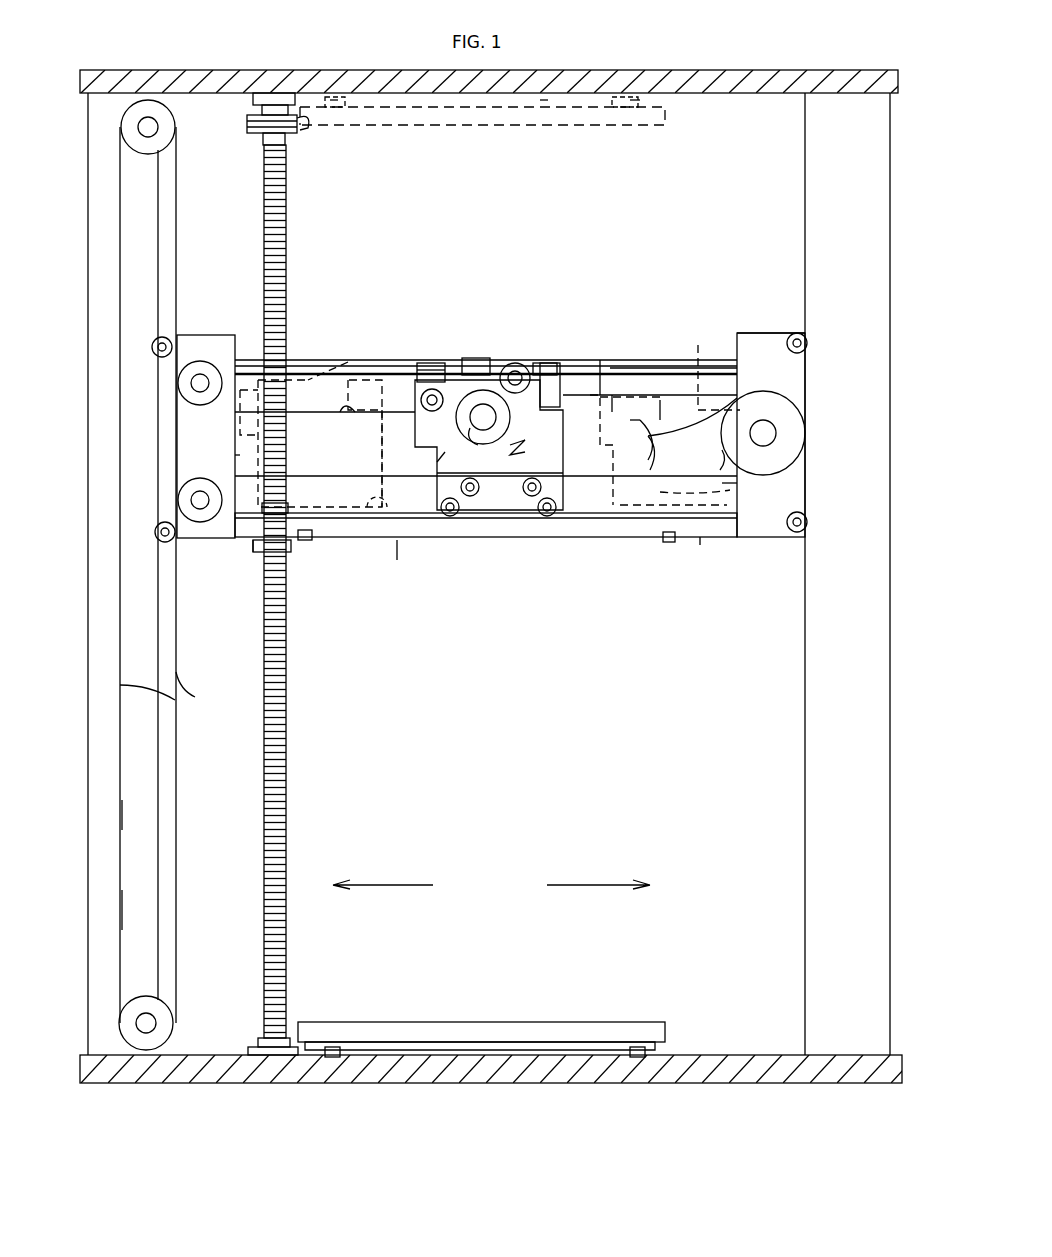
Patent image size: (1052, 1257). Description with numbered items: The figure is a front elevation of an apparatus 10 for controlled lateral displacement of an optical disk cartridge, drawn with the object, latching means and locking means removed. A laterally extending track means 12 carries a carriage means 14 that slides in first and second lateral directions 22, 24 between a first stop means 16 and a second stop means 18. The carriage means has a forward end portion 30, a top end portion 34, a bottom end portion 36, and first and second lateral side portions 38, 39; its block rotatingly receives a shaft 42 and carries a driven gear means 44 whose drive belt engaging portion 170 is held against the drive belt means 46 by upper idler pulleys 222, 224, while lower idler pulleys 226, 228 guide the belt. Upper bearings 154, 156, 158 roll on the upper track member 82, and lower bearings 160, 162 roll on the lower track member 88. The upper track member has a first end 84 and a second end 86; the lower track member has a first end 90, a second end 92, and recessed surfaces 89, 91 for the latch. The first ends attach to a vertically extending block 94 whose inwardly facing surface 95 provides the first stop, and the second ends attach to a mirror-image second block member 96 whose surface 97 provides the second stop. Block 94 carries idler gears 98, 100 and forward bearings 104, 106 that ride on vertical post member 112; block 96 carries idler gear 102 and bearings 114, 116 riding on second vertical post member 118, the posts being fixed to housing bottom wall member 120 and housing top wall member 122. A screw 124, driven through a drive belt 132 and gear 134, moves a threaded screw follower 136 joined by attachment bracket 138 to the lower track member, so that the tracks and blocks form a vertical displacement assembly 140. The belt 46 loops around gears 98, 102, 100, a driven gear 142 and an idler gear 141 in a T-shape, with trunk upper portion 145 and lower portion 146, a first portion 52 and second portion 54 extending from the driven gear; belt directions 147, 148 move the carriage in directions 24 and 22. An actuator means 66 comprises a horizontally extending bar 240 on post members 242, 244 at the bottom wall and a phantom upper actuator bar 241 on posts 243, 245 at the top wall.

The apparatus 10 is at (306, 38).
The track means 12 is at (630, 362).
The carriage means 14 is at (432, 487).
The first stop means 16 is at (276, 435).
The second stop means 18 is at (730, 486).
The first lateral direction 22 is at (410, 885).
The second lateral direction 24 is at (585, 885).
The forward end portion 30 is at (622, 406).
The top end portion 34 is at (418, 368).
The bottom end portion 36 is at (492, 513).
The first lateral side portion 38 is at (387, 458).
The second lateral side portion 39 is at (623, 426).
The shaft 42 is at (470, 444).
The driven gear means 44 is at (534, 456).
The drive belt means 46 is at (195, 697).
The first portion of drive belt means 52 is at (347, 426).
The second portion of drive belt means 54 is at (659, 410).
The actuator means 66 is at (527, 122).
The upper track member 82 is at (655, 368).
The first end of upper track member 84 is at (246, 358).
The second end of upper track member 86 is at (742, 332).
The lower track member 88 is at (650, 538).
The first recessed surface 89 is at (305, 540).
The first end of lower track member 90 is at (251, 545).
The second recessed surface 91 is at (668, 545).
The second end of lower track member 92 is at (702, 540).
The vertically extending block 94 is at (200, 412).
The inwardly facing surface 95 is at (236, 458).
The second block member 96 is at (770, 540).
The inwardly facing surface of second block 97 is at (751, 489).
The idler gear 98 is at (204, 372).
The idler gear 100 is at (178, 496).
The idler gear 102 is at (787, 432).
The forward bearing 104 is at (158, 340).
The forward bearing 106 is at (160, 540).
The vertical post member 112 is at (158, 752).
The bearing 114 is at (808, 343).
The bearing 116 is at (808, 522).
The second vertical post member 118 is at (812, 865).
The housing bottom wall member 120 is at (878, 1075).
The housing top wall member 122 is at (873, 82).
The screw 124 is at (288, 180).
The drive belt 132 is at (247, 128).
The gear 134 is at (305, 130).
The threaded screw follower 136 is at (288, 510).
The attachment bracket 138 is at (293, 552).
The vertical displacement assembly 140 is at (396, 560).
The idler gear 141 is at (165, 125).
The driven gear 142 is at (170, 1028).
The upper portion of belt trunk 145 is at (603, 360).
The lower portion of belt trunk 146 is at (708, 455).
The belt direction 147 is at (124, 835).
The belt direction 148 is at (125, 905).
The upper bearing 154 is at (423, 360).
The upper bearing 156 is at (468, 356).
The upper bearing 158 is at (556, 360).
The lower bearing 160 is at (450, 517).
The lower bearing 162 is at (548, 517).
The drive belt engaging portion 170 is at (498, 419).
The upper idler pulley 222 is at (420, 396).
The upper idler pulley 224 is at (520, 363).
The lower idler pulley 226 is at (438, 460).
The lower idler pulley 228 is at (604, 450).
The horizontally extending bar 240 is at (475, 1030).
The upper actuator bar 241 is at (548, 112).
The post member 242 is at (335, 1058).
The post 243 is at (345, 100).
The post member 244 is at (642, 1058).
The post 245 is at (640, 100).